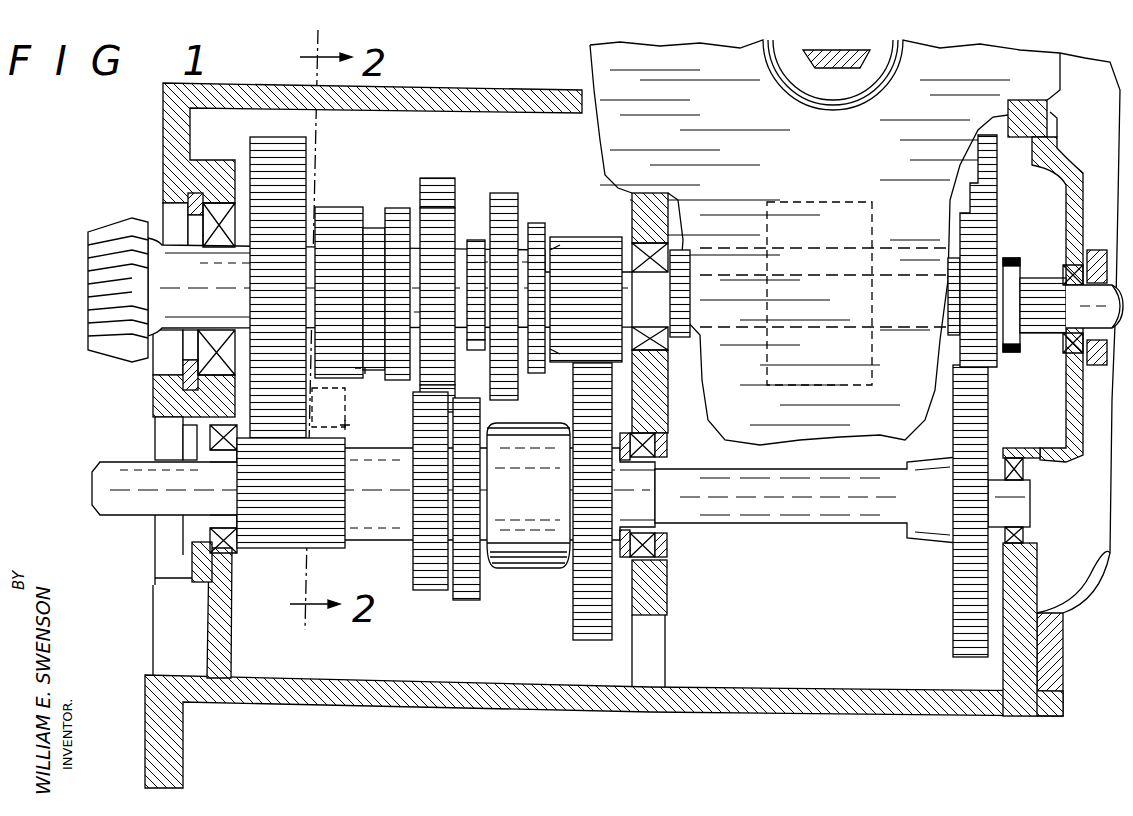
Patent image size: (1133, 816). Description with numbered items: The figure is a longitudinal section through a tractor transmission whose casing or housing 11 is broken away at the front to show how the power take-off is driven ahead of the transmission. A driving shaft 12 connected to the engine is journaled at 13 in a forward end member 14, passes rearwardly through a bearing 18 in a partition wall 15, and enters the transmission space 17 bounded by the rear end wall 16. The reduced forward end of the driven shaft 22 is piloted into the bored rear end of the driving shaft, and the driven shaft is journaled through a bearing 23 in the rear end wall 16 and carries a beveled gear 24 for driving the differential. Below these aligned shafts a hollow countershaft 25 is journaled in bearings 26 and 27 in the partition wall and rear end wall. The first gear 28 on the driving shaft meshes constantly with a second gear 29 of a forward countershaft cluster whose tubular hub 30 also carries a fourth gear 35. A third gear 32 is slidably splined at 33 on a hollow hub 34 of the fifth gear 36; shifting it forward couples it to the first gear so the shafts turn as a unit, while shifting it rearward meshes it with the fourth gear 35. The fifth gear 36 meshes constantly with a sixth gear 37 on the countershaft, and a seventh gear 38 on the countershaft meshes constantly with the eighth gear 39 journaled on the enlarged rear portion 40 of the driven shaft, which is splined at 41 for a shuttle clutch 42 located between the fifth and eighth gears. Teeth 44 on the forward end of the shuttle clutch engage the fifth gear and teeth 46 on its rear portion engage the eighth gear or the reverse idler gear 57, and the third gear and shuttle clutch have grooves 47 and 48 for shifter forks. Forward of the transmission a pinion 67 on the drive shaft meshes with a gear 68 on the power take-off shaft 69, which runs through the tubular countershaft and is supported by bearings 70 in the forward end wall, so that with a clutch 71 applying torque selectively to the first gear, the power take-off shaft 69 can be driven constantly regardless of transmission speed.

The casing or housing 11 is at (460, 705).
The driving shaft 12 is at (1092, 284).
The journal 13 is at (1063, 268).
The forward end member 14 is at (1068, 400).
The partition wall 15 is at (667, 592).
The rear end wall 16 is at (231, 640).
The transmission space 17 is at (345, 680).
The bearing 18 is at (662, 243).
The driven shaft 22 is at (118, 345).
The bearing 23 is at (203, 348).
The beveled gear 24 is at (105, 228).
The countershaft 25 is at (402, 538).
The bearing 26 is at (668, 440).
The bearing 27 is at (195, 560).
The first gear 28 is at (590, 237).
The second gear 29 is at (590, 640).
The tubular hub 30 is at (530, 568).
The third gear 32 is at (506, 195).
The splines 33 is at (475, 240).
The hollow hub 34 is at (462, 350).
The fourth gear 35 is at (465, 600).
The fifth gear 36 is at (445, 180).
The sixth gear 37 is at (430, 592).
The seventh gear 38 is at (273, 537).
The eighth gear 39 is at (305, 178).
The enlarged rear portion 40 is at (419, 287).
The splines 41 is at (414, 376).
The shuttle clutch 42 is at (355, 205).
The teeth 44 is at (421, 200).
The teeth 46 is at (357, 380).
The annular groove 47 is at (533, 225).
The groove 48 is at (386, 222).
The reverse idler gear 57 is at (350, 425).
The pinion 67 is at (1000, 245).
The gear 68 is at (988, 405).
The power take-off shaft 69 is at (851, 522).
The bearings 70 is at (1030, 470).
The clutch 71 is at (872, 205).